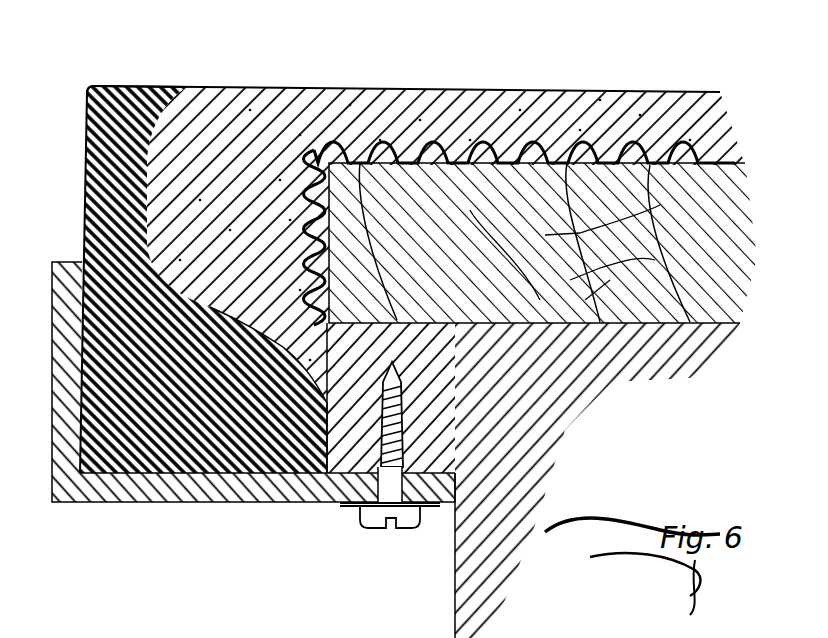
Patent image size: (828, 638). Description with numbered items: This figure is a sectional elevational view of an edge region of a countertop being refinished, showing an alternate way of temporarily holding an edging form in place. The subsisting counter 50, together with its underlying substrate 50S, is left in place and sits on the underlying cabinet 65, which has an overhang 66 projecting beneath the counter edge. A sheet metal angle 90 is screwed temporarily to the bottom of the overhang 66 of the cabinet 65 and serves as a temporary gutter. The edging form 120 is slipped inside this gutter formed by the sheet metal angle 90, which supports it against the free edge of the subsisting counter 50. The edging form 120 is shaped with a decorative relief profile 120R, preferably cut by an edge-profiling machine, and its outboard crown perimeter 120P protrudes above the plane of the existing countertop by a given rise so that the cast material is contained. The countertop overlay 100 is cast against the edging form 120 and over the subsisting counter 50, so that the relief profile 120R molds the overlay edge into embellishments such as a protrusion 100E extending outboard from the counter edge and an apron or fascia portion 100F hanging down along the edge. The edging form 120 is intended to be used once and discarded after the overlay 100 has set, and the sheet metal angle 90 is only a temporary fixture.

The countertop overlay 100 is at (478, 72).
The protrusion 100E is at (236, 151).
The apron- or fascia-portion 100F is at (275, 281).
The edging form 120 is at (186, 422).
The outboard crown perimeter 120P is at (120, 86).
The relief profile 120R is at (162, 268).
The subsisting counter 50 is at (482, 258).
The substrate 50S is at (556, 272).
The cabinet 65 is at (606, 436).
The overhang 66 is at (450, 443).
The sheet metal angle 90 is at (93, 494).